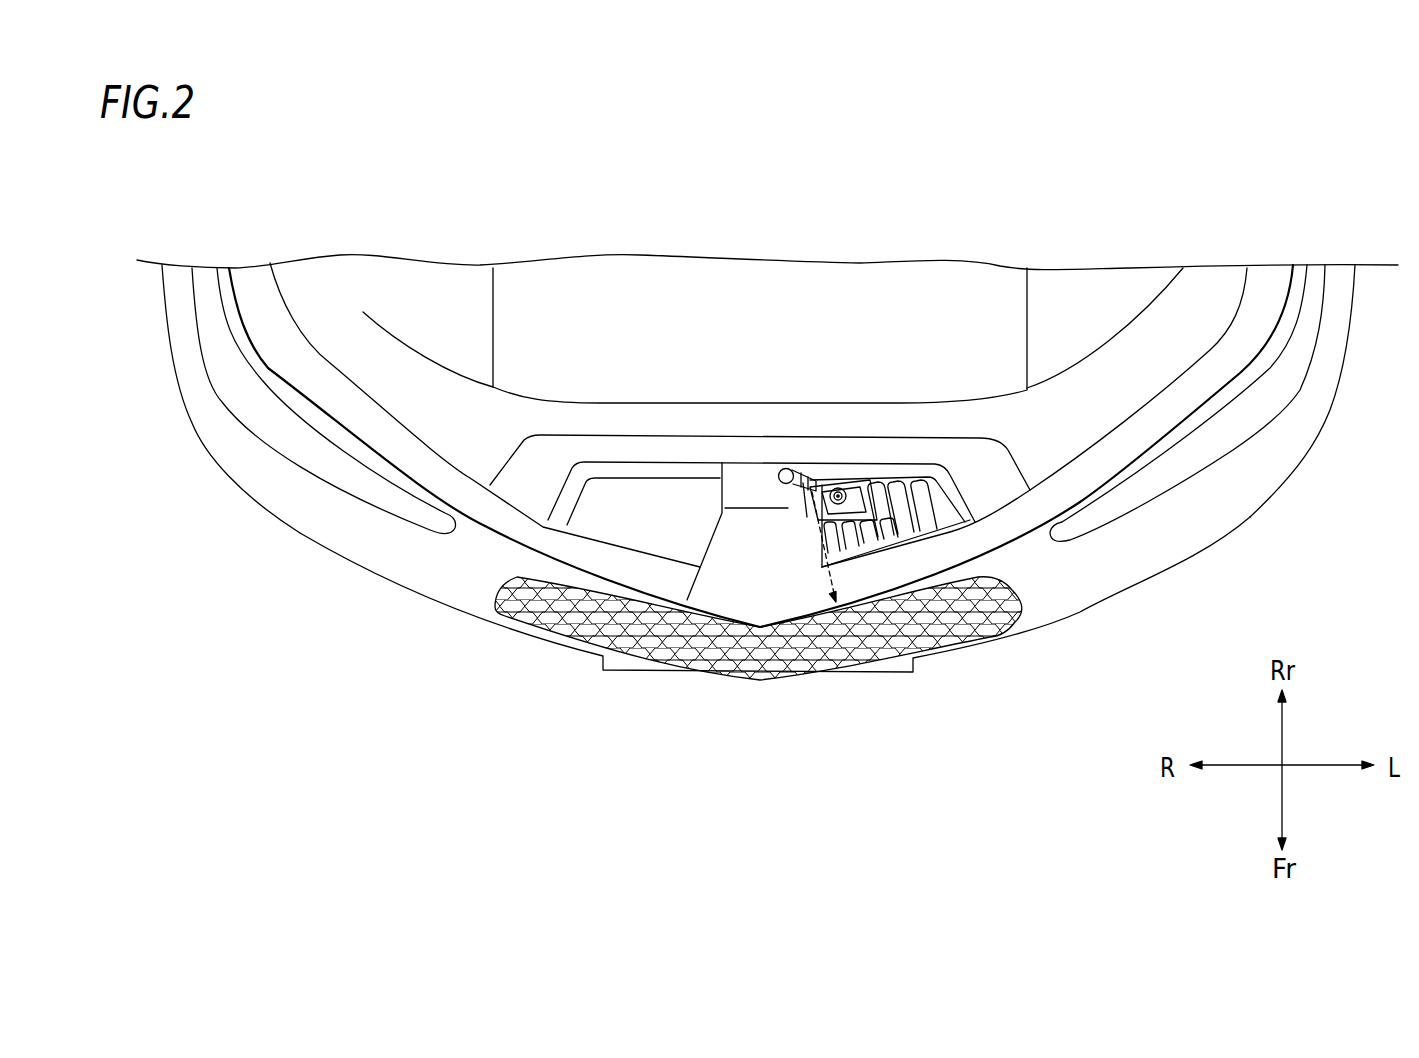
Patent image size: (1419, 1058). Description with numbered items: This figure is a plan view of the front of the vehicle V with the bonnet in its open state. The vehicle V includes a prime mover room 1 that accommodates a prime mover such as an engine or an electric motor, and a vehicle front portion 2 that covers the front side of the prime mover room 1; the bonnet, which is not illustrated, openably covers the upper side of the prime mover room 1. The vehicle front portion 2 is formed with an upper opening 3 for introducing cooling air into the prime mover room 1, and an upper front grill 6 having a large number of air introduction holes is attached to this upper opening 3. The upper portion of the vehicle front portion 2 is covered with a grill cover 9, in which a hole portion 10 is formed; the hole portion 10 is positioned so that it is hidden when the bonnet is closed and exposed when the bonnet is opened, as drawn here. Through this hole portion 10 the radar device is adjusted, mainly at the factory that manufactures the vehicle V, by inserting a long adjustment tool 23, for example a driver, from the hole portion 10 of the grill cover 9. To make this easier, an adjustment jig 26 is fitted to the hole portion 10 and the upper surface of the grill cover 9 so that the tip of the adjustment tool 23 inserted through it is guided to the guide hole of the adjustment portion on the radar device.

The vehicle V is at (1207, 166).
The prime mover room 1 is at (835, 316).
The vehicle front portion 2 is at (433, 620).
The upper opening 3 is at (990, 637).
The upper front grill 6 is at (940, 630).
The grill cover 9 is at (637, 522).
The hole portion 10 is at (803, 685).
The adjustment tool 23 is at (777, 482).
The adjustment jig 26 is at (807, 517).